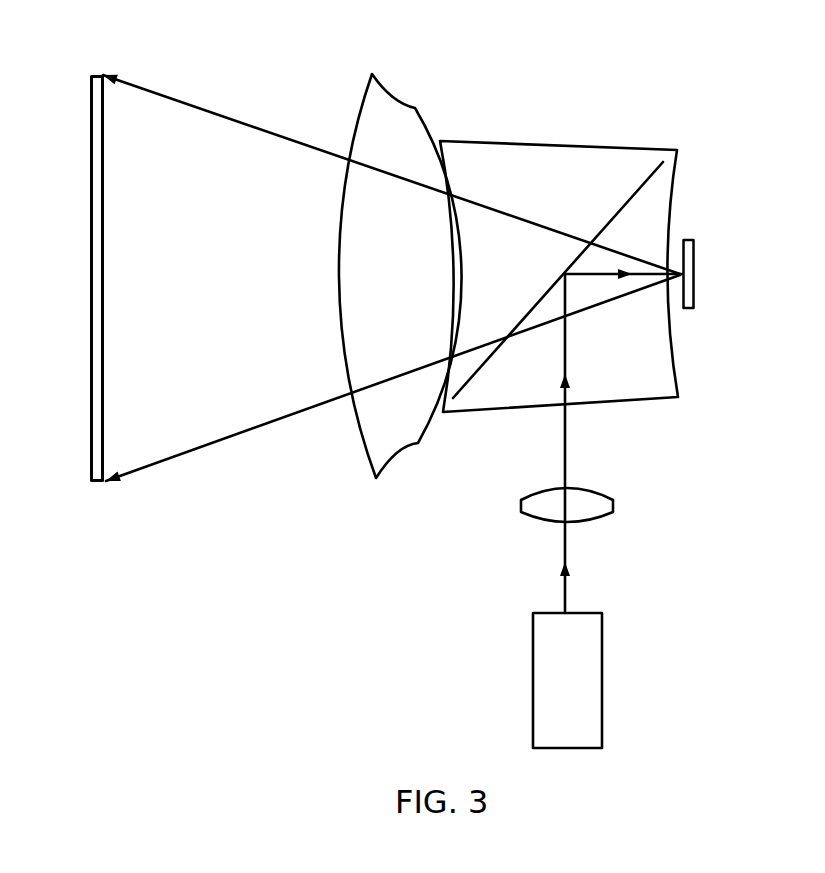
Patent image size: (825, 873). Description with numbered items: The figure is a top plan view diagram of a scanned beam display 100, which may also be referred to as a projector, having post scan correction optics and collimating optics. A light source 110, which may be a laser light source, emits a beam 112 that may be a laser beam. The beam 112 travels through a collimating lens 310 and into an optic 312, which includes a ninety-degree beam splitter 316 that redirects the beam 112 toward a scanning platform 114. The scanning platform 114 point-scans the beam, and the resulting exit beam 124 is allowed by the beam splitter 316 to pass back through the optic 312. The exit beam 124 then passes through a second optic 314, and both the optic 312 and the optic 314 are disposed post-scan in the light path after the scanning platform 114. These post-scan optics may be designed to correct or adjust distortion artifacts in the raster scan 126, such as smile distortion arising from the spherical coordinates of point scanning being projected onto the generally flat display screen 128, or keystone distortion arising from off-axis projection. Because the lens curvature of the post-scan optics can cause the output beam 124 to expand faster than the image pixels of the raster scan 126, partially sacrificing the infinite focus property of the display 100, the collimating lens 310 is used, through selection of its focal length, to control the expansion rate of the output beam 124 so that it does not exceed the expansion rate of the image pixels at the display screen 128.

The scanned beam display 100 is at (733, 82).
The light source 110 is at (603, 633).
The beam 112 is at (568, 590).
The scanning platform 114 is at (695, 250).
The exit beam 124 is at (235, 120).
The raster scan 126 is at (103, 155).
The display screen 128 is at (90, 110).
The collimating lens 310 is at (598, 492).
The optic 312 is at (673, 363).
The optic 314 is at (368, 468).
The 90-degree beam splitter 316 is at (642, 183).